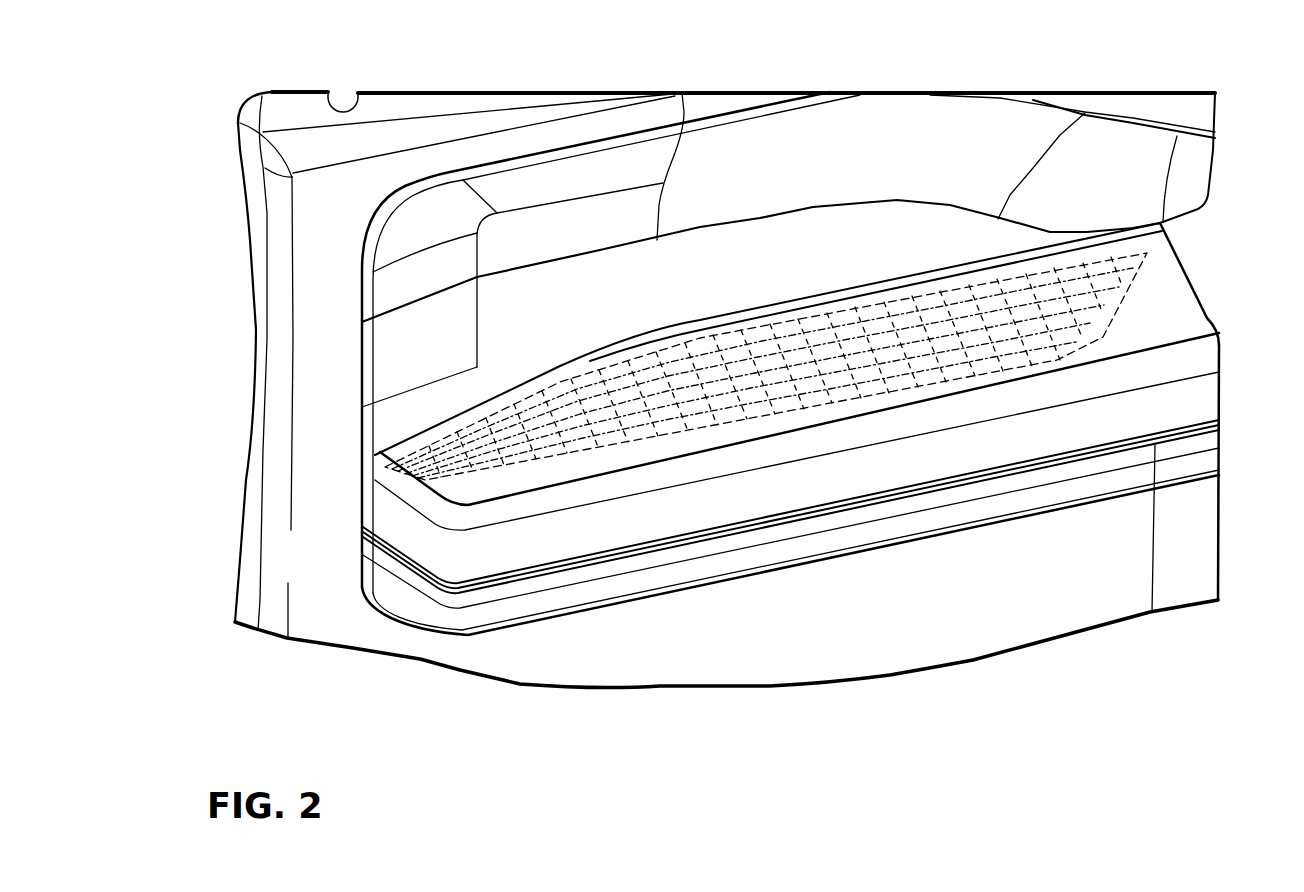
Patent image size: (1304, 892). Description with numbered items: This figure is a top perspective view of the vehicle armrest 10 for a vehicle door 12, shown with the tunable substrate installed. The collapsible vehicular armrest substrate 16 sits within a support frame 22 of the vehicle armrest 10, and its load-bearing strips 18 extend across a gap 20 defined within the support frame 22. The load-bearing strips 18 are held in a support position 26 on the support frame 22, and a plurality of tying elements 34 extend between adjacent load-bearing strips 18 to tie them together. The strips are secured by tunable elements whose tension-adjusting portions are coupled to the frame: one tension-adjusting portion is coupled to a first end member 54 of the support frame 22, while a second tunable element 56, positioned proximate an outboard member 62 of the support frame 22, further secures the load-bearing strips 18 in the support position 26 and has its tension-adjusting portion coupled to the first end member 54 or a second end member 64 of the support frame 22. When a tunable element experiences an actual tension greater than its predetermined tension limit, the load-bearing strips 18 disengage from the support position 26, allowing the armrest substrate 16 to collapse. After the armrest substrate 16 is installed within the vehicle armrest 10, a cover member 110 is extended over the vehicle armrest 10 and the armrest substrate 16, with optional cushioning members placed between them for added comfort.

The vehicle armrest 10 is at (437, 402).
The vehicle door 12 is at (465, 72).
The collapsible vehicular armrest substrate 16 is at (637, 470).
The load-bearing strips 18 is at (1133, 293).
The gap 20 is at (1088, 369).
The support frame 22 is at (1048, 268).
The support position 26 is at (803, 270).
The tying elements 34 is at (730, 400).
The first end member 54 is at (392, 468).
The second tunable element 56 is at (660, 343).
The outboard member 62 is at (884, 300).
The second end member 64 is at (1147, 265).
The cover member 110 is at (1167, 318).